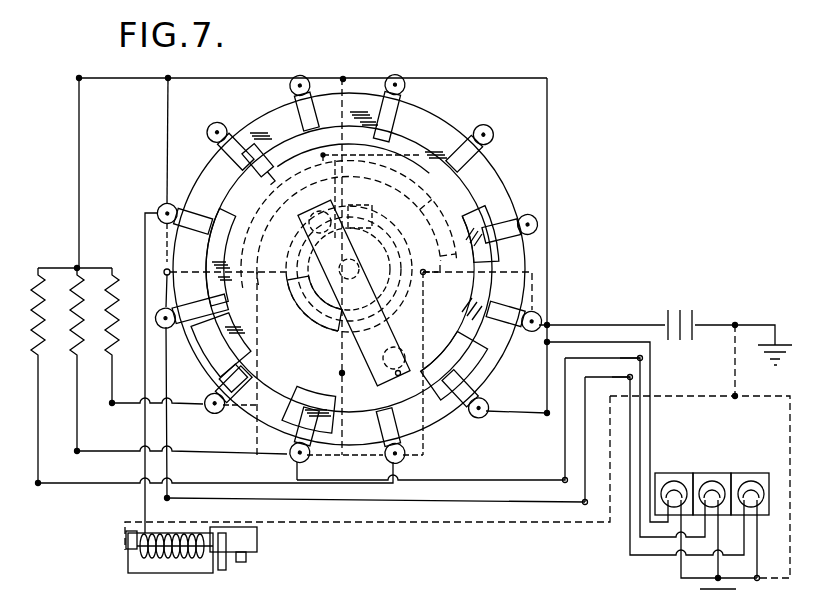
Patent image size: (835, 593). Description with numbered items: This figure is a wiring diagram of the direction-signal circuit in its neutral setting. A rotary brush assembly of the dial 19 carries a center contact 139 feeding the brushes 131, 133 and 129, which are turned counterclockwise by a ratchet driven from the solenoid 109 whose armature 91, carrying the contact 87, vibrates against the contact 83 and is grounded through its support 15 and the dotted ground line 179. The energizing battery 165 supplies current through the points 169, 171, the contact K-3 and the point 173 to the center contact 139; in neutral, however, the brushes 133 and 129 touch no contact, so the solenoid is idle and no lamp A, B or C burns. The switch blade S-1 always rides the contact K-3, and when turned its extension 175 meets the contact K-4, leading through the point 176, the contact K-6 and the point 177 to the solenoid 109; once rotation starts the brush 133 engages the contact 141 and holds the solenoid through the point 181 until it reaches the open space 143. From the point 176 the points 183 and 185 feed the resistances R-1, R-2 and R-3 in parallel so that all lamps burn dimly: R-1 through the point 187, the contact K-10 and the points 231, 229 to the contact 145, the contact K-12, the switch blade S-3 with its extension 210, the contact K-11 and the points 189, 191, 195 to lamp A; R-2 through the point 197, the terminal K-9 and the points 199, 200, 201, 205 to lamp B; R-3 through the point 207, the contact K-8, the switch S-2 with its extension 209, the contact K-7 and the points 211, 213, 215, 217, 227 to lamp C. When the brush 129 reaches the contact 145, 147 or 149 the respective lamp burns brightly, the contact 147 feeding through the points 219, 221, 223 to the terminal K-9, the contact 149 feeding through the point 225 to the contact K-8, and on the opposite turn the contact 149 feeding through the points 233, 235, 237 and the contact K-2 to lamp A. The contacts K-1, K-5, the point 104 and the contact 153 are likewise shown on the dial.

The dial ring 19 is at (405, 103).
The point 237 is at (426, 124).
The switch blade S-1 is at (397, 138).
The contact 147 is at (378, 178).
The arcuate contact 149 is at (262, 200).
The contact 145 is at (430, 206).
The contact 141 is at (306, 320).
The center contact 139 is at (347, 269).
The brush 131 is at (339, 266).
The open space 143 is at (330, 212).
The brush 133 is at (310, 226).
The brush 129 is at (383, 356).
The point 233 is at (323, 155).
The point 229 is at (439, 279).
The extension 175 is at (256, 148).
The point 235 is at (443, 146).
The extension 210 is at (484, 212).
The switch blade S-3 is at (450, 344).
The extension 209 is at (260, 402).
The switch S-2 is at (220, 335).
The contact 153 is at (225, 385).
The point 221 is at (342, 373).
The point 219 is at (396, 374).
The conductor 104 is at (477, 291).
The relay K-1 is at (528, 212).
The contact K-2 is at (492, 134).
The contact K-3 is at (397, 75).
The contact K-4 is at (298, 75).
The relay K-5 is at (210, 123).
The contact K-6 is at (160, 205).
The contact K-7 is at (170, 330).
The contact K-8 is at (212, 414).
The terminal K-9 is at (283, 460).
The contact K-10 is at (402, 460).
The contact K-11 is at (486, 416).
The contact K-12 is at (528, 332).
The point 183 is at (79, 78).
The point 176 is at (168, 78).
The point 173 is at (343, 79).
The point 171 is at (547, 78).
The point 177 is at (140, 216).
The point 181 is at (219, 360).
The point 185 is at (77, 268).
The resistance R-1 is at (34, 268).
The resistance R-2 is at (70, 355).
The resistance R-3 is at (112, 268).
The point 207 is at (112, 403).
The point 225 is at (257, 415).
The point 197 is at (77, 451).
The point 187 is at (38, 483).
The point 211 is at (167, 498).
The point 199 is at (314, 469).
The point 223 is at (342, 455).
The point 231 is at (425, 450).
The point 200 is at (564, 479).
The point 213 is at (583, 501).
The point 189 is at (523, 424).
The point 169 is at (547, 325).
The energizing battery 165 is at (680, 310).
The point 195 is at (672, 340).
The point 191 is at (547, 342).
The point 201 is at (570, 358).
The point 205 is at (624, 349).
The point 215 is at (656, 456).
The point 217 is at (622, 367).
The ground 179 is at (125, 527).
The point 227 is at (632, 560).
The lamp A is at (674, 473).
The lamp B is at (712, 473).
The lamp C is at (751, 473).
The support 15 is at (130, 572).
The solenoid 109 is at (172, 560).
The armature 91 is at (233, 539).
The contact 87 is at (229, 561).
The contact 83 is at (242, 562).